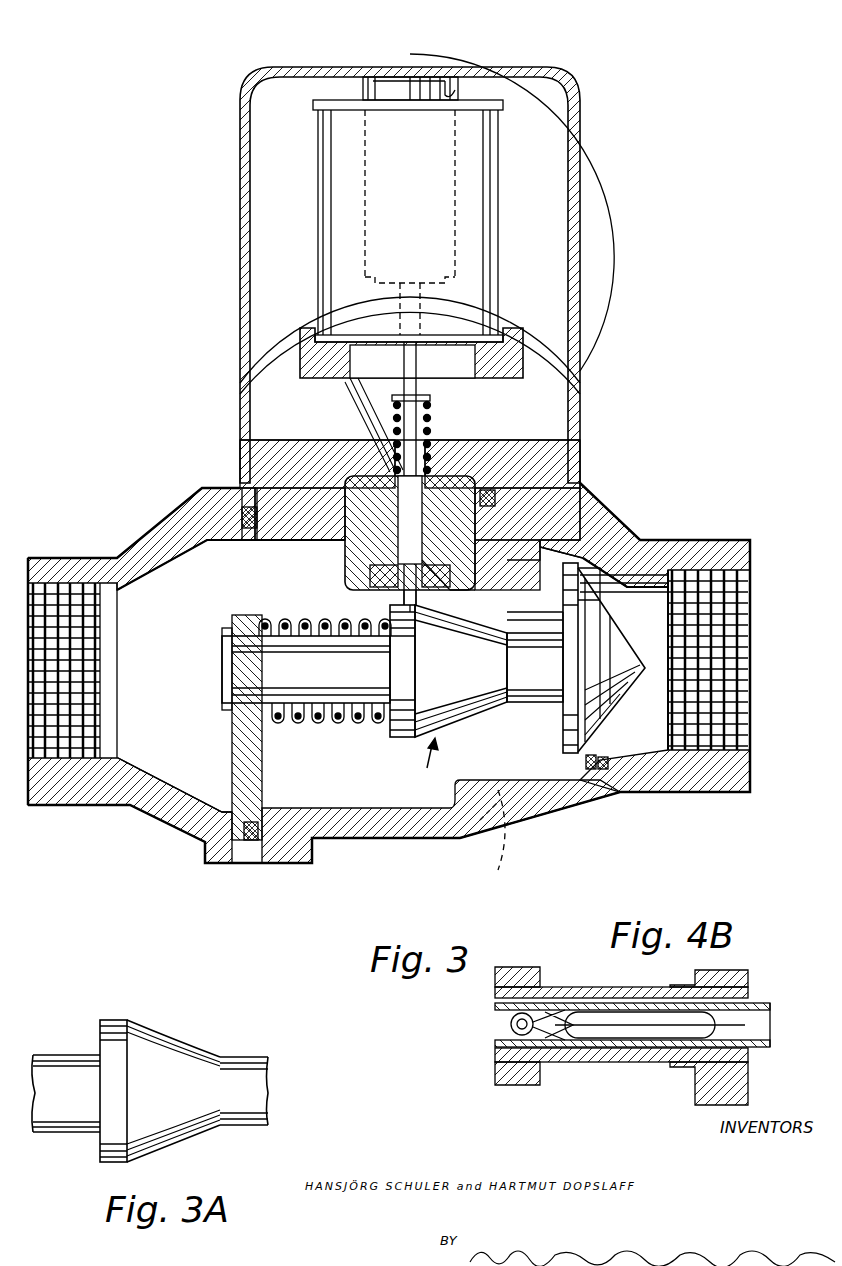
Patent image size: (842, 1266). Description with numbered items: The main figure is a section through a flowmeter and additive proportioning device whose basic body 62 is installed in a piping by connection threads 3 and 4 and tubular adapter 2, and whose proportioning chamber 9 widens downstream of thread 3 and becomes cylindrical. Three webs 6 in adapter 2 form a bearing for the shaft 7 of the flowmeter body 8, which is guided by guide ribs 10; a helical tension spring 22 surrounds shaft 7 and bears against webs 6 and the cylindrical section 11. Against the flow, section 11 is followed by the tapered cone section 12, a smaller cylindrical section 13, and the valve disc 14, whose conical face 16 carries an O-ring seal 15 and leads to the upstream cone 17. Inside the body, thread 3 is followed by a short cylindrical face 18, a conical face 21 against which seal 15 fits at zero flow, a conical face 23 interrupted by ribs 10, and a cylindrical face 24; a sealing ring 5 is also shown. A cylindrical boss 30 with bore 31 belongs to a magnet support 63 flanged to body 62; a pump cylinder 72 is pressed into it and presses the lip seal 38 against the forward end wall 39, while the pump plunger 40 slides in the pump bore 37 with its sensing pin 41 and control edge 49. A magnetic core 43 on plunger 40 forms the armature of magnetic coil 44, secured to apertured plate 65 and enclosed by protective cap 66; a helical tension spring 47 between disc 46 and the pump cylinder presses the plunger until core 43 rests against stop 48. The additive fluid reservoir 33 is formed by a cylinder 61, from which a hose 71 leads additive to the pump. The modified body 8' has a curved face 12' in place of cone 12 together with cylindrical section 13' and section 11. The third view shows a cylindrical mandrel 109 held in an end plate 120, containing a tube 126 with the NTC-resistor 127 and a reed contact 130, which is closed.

In FIG. 3, the tubular adapter 2 is at (178, 828).
In FIG. 3, the connection thread 3 is at (710, 770).
In FIG. 3, the connection thread 4 is at (72, 760).
In FIG. 3, the sealing ring 5 is at (250, 842).
In FIG. 3, the webs 6 is at (235, 770).
In FIG. 3, the shaft 7 is at (248, 666).
In FIG. 3, the flowmeter body 8 is at (425, 814).
In FIG. 3A, the modified body 8' is at (66, 1068).
In FIG. 3, the proportioning chamber 9 is at (528, 800).
In FIG. 3, the guide ribs 10 is at (530, 600).
In FIG. 3, the cylindrical section 11 is at (396, 738).
In FIG. 3A, the cylindrical section 11 is at (108, 1160).
In FIG. 3, the tapered cone section 12 is at (461, 684).
In FIG. 3A, the curved face 12' is at (184, 1091).
In FIG. 3, the cylindrical section 13 is at (535, 673).
In FIG. 3A, the cylindrical section 13' is at (248, 1065).
In FIG. 3, the valve disc 14 is at (605, 580).
In FIG. 3, the O-ring seal 15 is at (580, 780).
In FIG. 3, the conical face 16 is at (598, 772).
In FIG. 3, the cone 17 is at (612, 688).
In FIG. 3, the cylindrical face 18 is at (650, 770).
In FIG. 3, the conical face 21 is at (632, 585).
In FIG. 3, the helical tension spring 22 is at (298, 722).
In FIG. 3, the conical face 23 is at (503, 836).
In FIG. 3, the cylindrical face 24 is at (402, 830).
In FIG. 3, the cylindrical boss 30 is at (372, 578).
In FIG. 3, the bore 31 is at (424, 580).
In FIG. 3, the additive fluid reservoir 33 is at (555, 405).
In FIG. 3, the pump through-bore 37 is at (380, 560).
In FIG. 3, the lip seal 38 is at (385, 630).
In FIG. 3, the forward end wall 39 is at (445, 600).
In FIG. 3, the pump plunger 40 is at (340, 530).
In FIG. 3, the sensing pin 41 is at (412, 612).
In FIG. 3, the magnetic core 43 is at (458, 77).
In FIG. 3, the magnetic coil 44 is at (480, 205).
In FIG. 3, the disc 46 is at (430, 398).
In FIG. 3, the helical tension spring 47 is at (393, 462).
In FIG. 3, the stop 48 is at (415, 77).
In FIG. 3, the control edge 49 is at (462, 553).
In FIG. 3, the cylinder 61 is at (618, 236).
In FIG. 3, the basic body 62 is at (590, 520).
In FIG. 3, the magnet support 63 is at (560, 465).
In FIG. 3, the apertured plate 65 is at (512, 353).
In FIG. 3, the protective cap 66 is at (585, 185).
In FIG. 3, the hose 71 is at (360, 395).
In FIG. 3, the pump cylinder 72 is at (445, 470).
In FIG. 4B, the cylindrical mandrel 109 is at (608, 1000).
In FIG. 4B, the end plate 120 is at (720, 975).
In FIG. 4B, the tube 126 is at (560, 1048).
In FIG. 4B, the NTC-resistor 127 is at (511, 1024).
In FIG. 4B, the reed contact 130 is at (668, 1028).